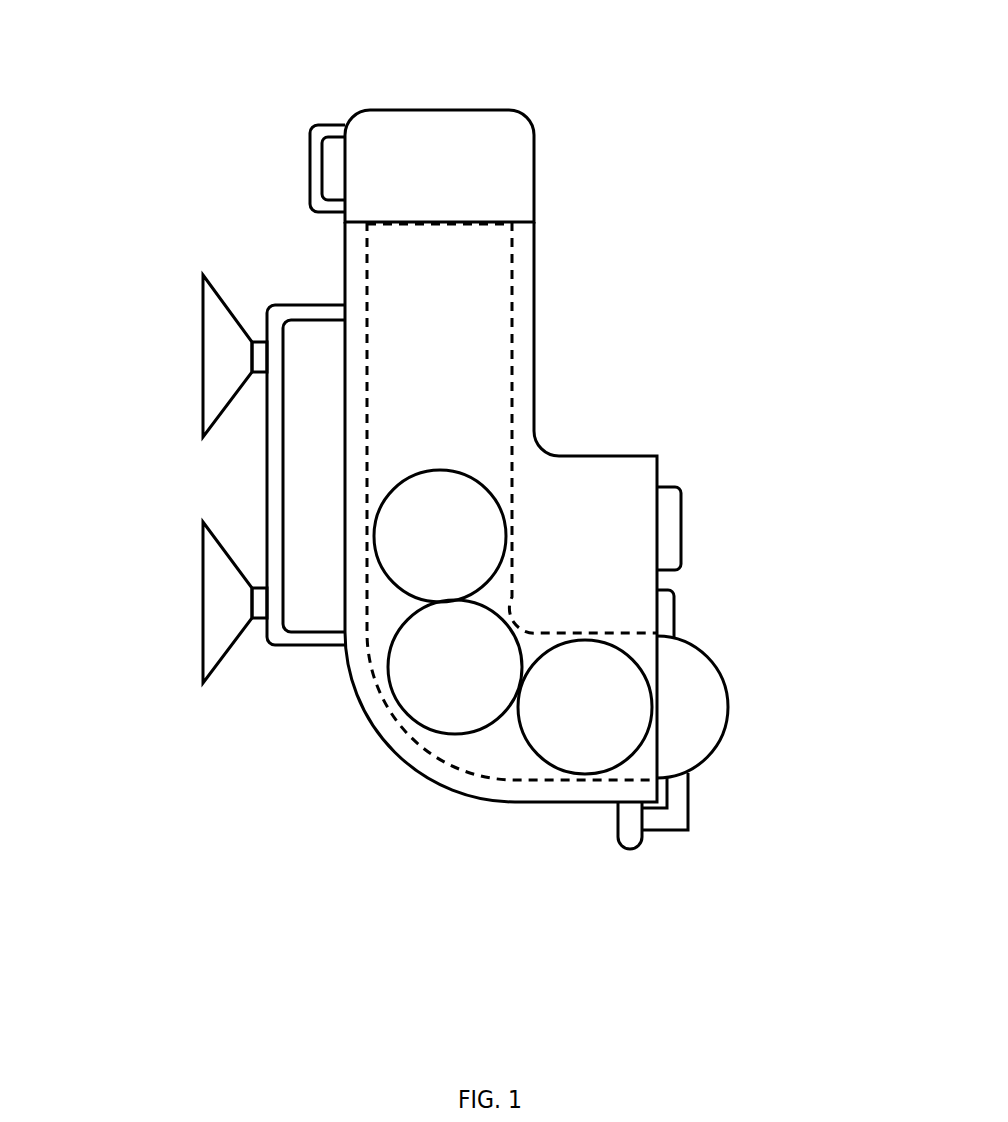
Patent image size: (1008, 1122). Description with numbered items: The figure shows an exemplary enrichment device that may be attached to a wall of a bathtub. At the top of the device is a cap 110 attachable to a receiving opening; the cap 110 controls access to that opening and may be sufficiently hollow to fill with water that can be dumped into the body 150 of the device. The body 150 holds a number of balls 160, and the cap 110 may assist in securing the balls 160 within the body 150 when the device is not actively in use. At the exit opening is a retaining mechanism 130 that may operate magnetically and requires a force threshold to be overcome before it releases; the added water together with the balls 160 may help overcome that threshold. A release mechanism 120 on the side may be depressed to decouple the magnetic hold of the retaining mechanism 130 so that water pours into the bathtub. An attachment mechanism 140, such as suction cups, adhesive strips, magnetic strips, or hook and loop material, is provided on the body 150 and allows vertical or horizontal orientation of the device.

The cap 110 is at (535, 177).
The release mechanism 120 is at (681, 525).
The retaining mechanism 130 is at (735, 707).
The attachment mechanism 140 is at (178, 540).
The body 150 is at (535, 329).
The balls 160 is at (585, 790).